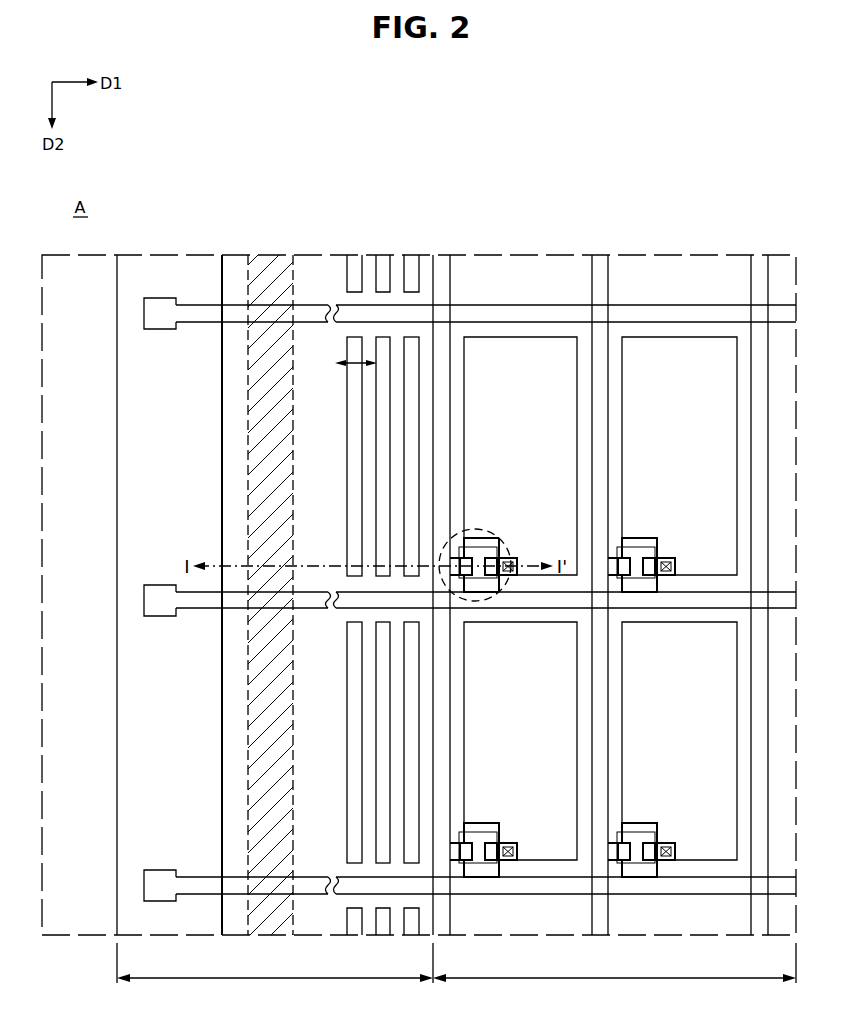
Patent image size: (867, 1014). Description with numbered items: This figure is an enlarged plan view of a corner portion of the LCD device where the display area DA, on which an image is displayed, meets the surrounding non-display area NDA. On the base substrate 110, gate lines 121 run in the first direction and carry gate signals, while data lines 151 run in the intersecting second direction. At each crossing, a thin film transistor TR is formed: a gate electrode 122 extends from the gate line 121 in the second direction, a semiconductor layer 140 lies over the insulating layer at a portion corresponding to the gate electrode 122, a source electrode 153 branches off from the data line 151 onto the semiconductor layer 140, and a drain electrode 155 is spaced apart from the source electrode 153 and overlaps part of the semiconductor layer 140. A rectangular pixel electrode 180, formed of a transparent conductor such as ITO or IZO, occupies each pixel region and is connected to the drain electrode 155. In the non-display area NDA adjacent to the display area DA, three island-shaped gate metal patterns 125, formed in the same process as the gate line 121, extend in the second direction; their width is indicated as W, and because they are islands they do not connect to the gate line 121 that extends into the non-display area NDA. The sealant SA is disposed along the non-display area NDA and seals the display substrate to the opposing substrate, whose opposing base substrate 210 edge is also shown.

The base substrate 110 is at (117, 510).
The opposing base substrate 210 is at (220, 280).
The sealant SA is at (270, 803).
The gate line 121 is at (345, 590).
The gate electrode 122 is at (455, 596).
The gate metal pattern 125 is at (410, 455).
The width of dummy pattern W is at (348, 362).
The data line 151 is at (452, 413).
The source electrode 153 is at (455, 556).
The drain electrode 155 is at (498, 540).
The semiconductor layer 140 is at (474, 549).
The pixel electrode 180 is at (520, 337).
The thin film transistor TR is at (511, 537).
The non-display area NDA is at (275, 973).
The display area DA is at (614, 973).